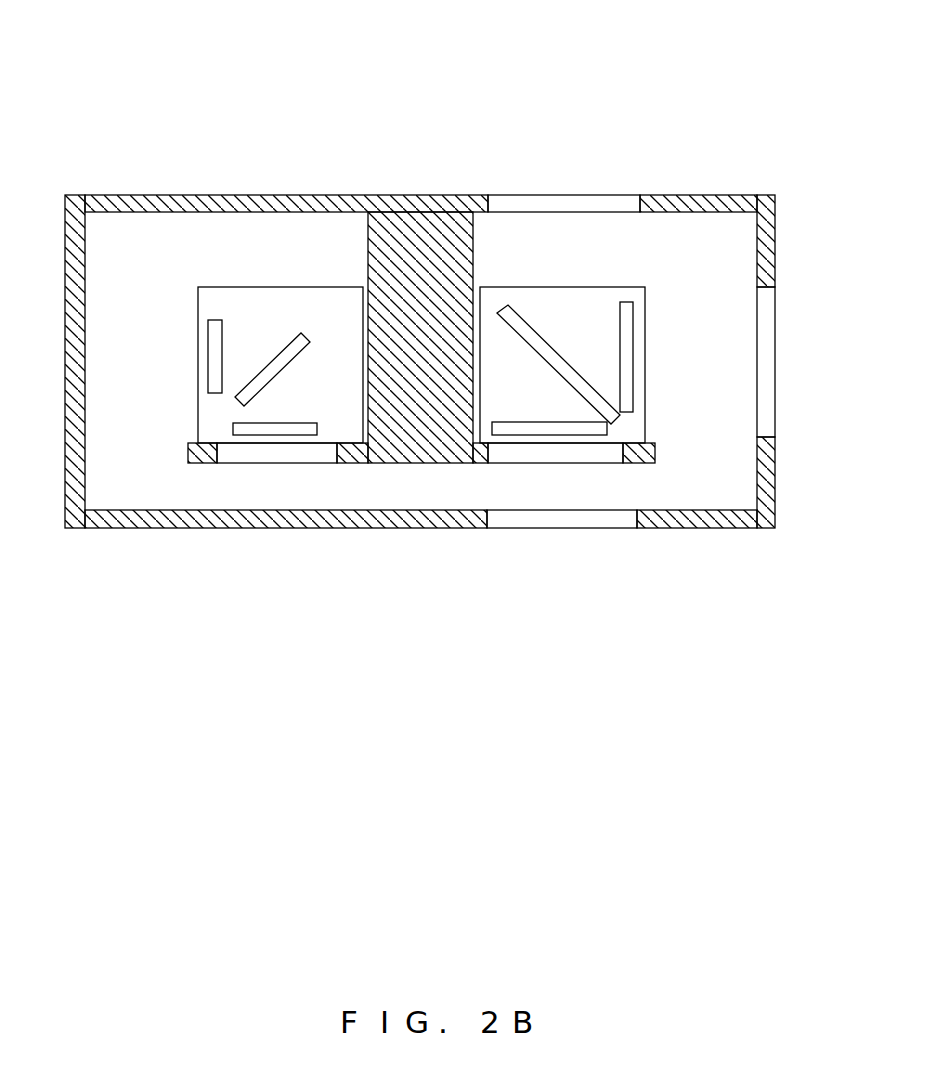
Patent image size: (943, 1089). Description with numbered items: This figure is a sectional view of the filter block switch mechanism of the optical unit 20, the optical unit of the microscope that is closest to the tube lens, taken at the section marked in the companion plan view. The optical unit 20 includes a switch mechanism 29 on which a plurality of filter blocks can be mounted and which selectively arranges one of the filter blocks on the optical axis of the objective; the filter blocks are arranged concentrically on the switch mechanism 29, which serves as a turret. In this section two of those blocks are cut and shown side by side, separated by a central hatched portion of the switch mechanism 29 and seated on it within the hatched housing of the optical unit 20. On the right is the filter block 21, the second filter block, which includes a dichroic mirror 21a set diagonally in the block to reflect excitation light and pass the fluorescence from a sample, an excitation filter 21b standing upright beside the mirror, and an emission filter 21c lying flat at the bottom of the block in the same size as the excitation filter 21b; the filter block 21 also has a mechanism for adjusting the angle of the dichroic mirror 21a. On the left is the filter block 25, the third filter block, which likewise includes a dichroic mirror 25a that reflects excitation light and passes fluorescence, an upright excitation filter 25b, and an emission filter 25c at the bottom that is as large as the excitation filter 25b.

The optical unit 20 is at (835, 57).
The filter block 21 is at (586, 302).
The dichroic mirror 21a is at (575, 330).
The excitation filter 21b is at (627, 335).
The emission filter 21c is at (548, 430).
The filter block 25 is at (259, 302).
The dichroic mirror 25a is at (298, 360).
The excitation filter 25b is at (213, 337).
The emission filter 25c is at (285, 430).
The switch mechanism 29 is at (425, 455).